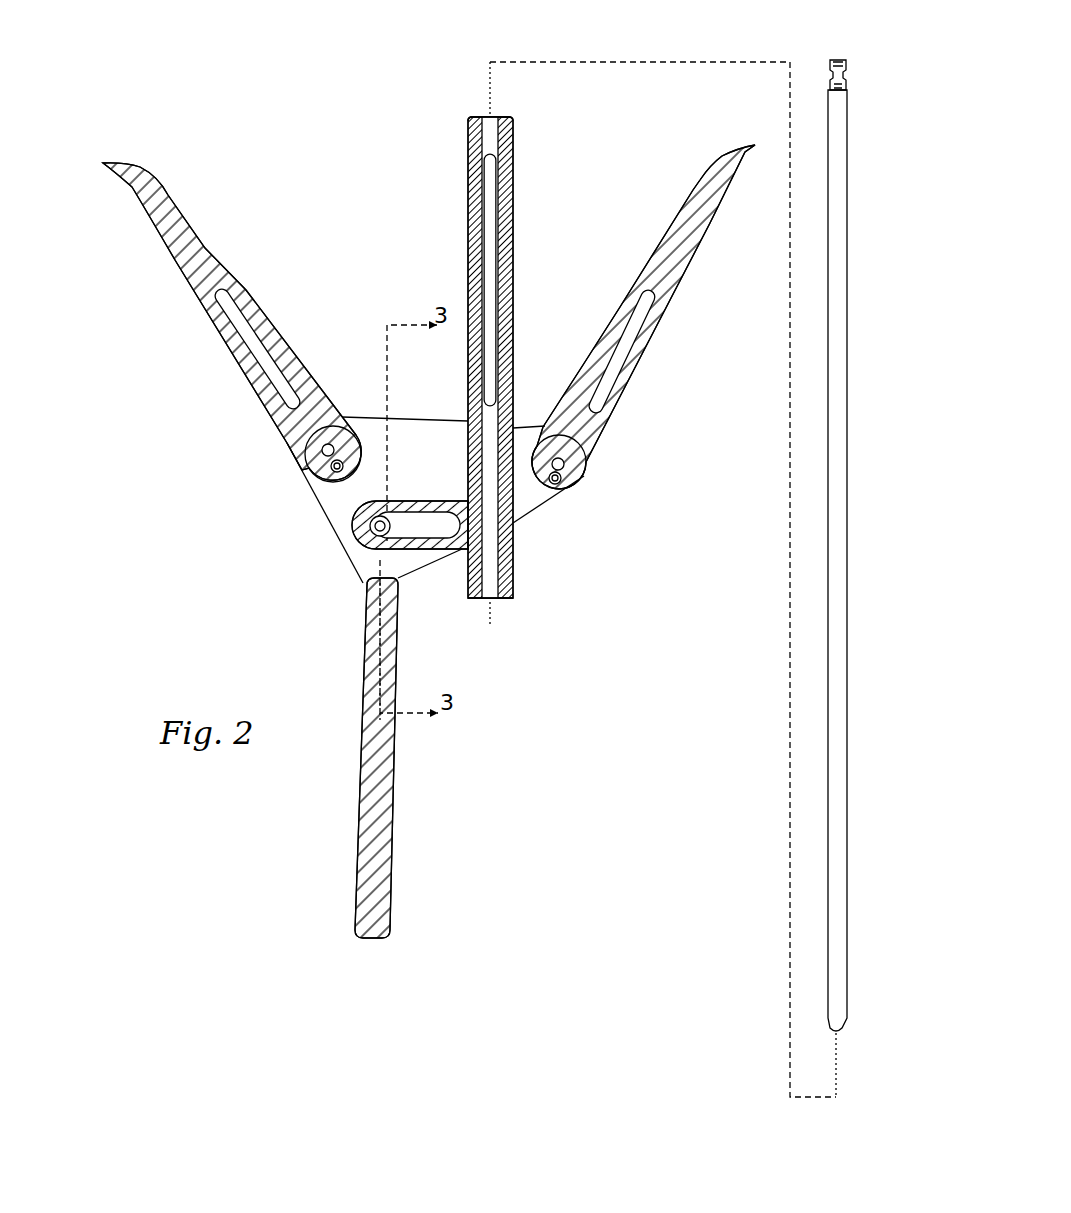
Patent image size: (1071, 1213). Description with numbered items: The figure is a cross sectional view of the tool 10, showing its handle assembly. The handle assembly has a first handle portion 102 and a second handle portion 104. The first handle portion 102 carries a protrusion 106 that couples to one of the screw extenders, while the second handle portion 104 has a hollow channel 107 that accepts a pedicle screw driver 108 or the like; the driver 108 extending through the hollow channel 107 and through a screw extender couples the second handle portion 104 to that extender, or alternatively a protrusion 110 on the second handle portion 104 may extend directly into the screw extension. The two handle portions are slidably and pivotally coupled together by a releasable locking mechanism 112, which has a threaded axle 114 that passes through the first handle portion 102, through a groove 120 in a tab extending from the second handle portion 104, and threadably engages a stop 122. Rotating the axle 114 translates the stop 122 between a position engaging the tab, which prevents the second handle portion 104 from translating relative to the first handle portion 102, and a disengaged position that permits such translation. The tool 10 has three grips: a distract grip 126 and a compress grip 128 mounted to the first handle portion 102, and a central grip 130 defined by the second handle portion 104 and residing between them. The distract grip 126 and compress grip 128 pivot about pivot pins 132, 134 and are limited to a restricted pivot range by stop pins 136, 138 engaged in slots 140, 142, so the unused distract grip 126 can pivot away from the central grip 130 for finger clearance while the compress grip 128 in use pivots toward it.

The tool 10 is at (166, 440).
The first handle portion 102 is at (538, 512).
The second handle portion 104 is at (456, 190).
The protrusion 106 is at (366, 652).
The hollow channel 107 is at (488, 110).
The pedicle screw driver 108 is at (834, 58).
The protrusion 110 is at (516, 580).
The releasable locking mechanism 112 is at (350, 562).
The threaded axle 114 is at (340, 548).
The groove 120 is at (435, 545).
The stop 122 is at (345, 527).
The distract grip 126 is at (140, 210).
The compress grip 128 is at (680, 305).
The central grip 130 is at (470, 245).
The pivot pin 132 is at (346, 405).
The pivot pin 134 is at (548, 422).
The stop pin 136 is at (322, 483).
The stop pin 138 is at (584, 478).
The slot 140 is at (335, 444).
The slot 142 is at (579, 494).